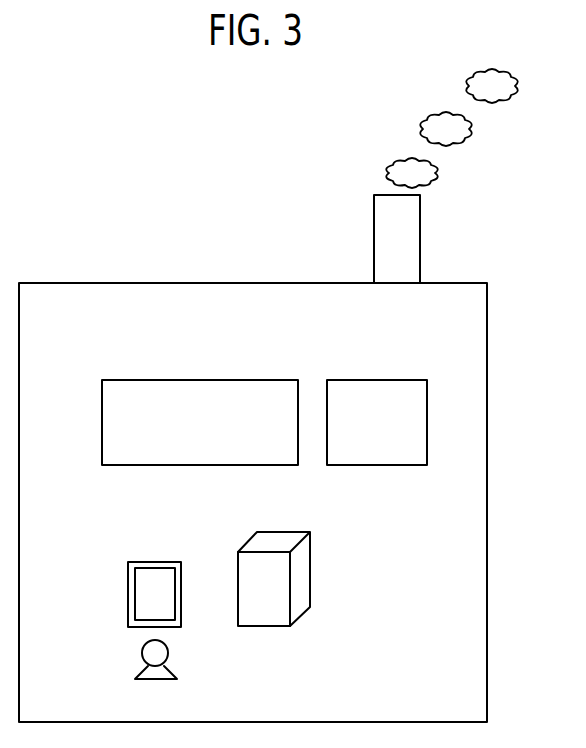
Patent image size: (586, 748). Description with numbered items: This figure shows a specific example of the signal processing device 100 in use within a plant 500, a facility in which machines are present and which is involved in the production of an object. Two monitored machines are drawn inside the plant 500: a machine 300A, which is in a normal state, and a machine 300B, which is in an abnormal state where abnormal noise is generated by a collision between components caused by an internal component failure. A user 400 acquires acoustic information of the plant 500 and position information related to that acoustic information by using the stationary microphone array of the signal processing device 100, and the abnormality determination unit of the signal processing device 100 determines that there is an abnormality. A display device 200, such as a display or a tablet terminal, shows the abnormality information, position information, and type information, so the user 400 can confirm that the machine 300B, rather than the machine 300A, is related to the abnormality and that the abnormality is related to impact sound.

The plant 500 is at (157, 283).
The machine 300A is at (200, 380).
The machine 300B is at (360, 380).
The signal processing device 100 is at (283, 530).
The display device 200 is at (150, 562).
The user 400 is at (175, 668).